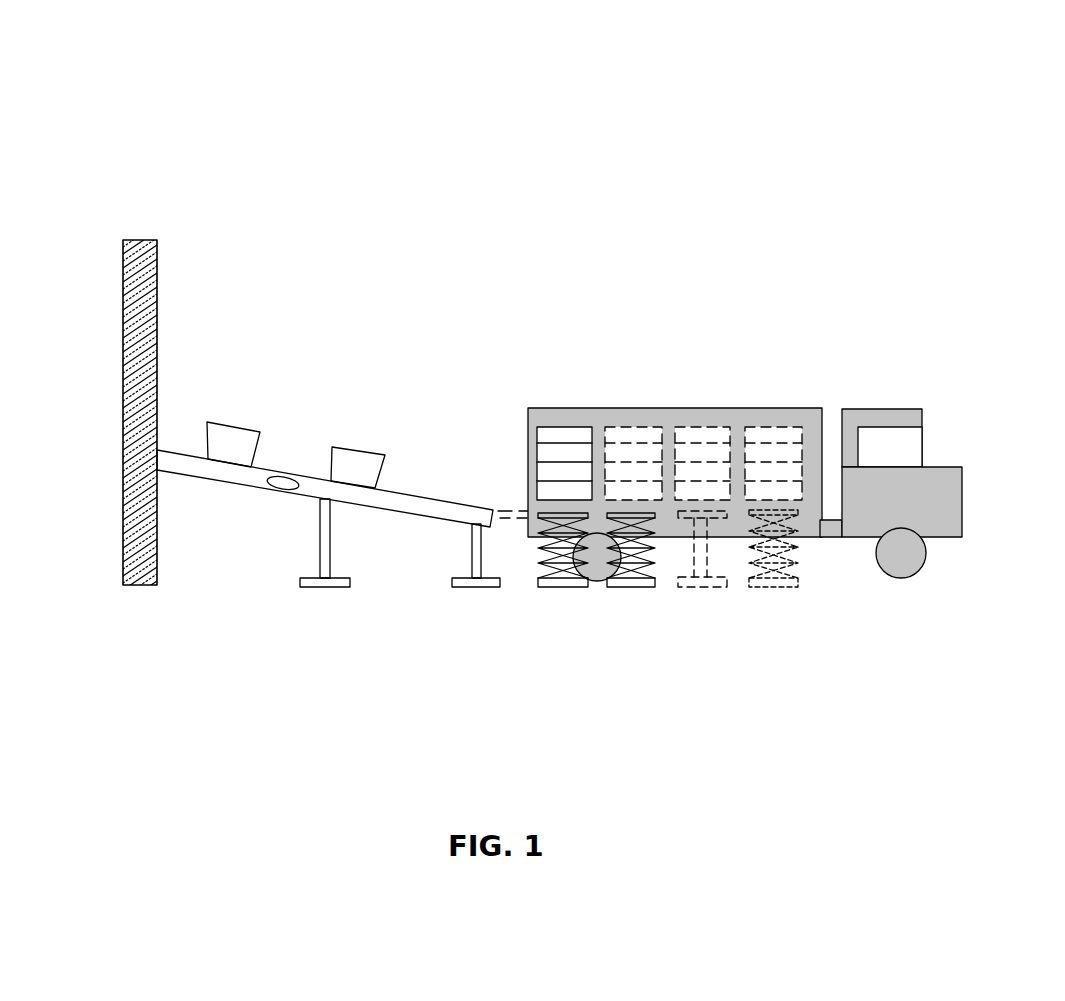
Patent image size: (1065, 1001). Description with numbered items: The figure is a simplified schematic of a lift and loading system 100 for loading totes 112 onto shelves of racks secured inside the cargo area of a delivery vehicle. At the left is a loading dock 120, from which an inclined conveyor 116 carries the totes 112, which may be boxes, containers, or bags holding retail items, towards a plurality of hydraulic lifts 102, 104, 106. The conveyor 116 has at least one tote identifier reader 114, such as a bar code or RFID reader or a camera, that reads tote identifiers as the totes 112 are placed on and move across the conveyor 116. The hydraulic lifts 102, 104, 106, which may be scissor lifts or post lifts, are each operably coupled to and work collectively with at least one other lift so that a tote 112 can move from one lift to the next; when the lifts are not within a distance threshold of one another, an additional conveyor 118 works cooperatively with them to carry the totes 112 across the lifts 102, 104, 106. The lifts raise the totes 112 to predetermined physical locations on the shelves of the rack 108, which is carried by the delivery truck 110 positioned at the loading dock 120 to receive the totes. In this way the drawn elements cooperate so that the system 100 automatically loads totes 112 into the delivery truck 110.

The lift and loading system 100 is at (990, 85).
The first hydraulic lift 102 is at (555, 587).
The hydraulic lift 104 is at (623, 587).
The hydraulic lift 106 is at (700, 587).
The rack 108 is at (772, 427).
The delivery truck 110 is at (910, 408).
The tote 112 is at (360, 450).
The tote identifier reader 114 is at (285, 488).
The conveyor 116 is at (420, 516).
The additional conveyor 118 is at (500, 508).
The loading dock 120 is at (122, 270).